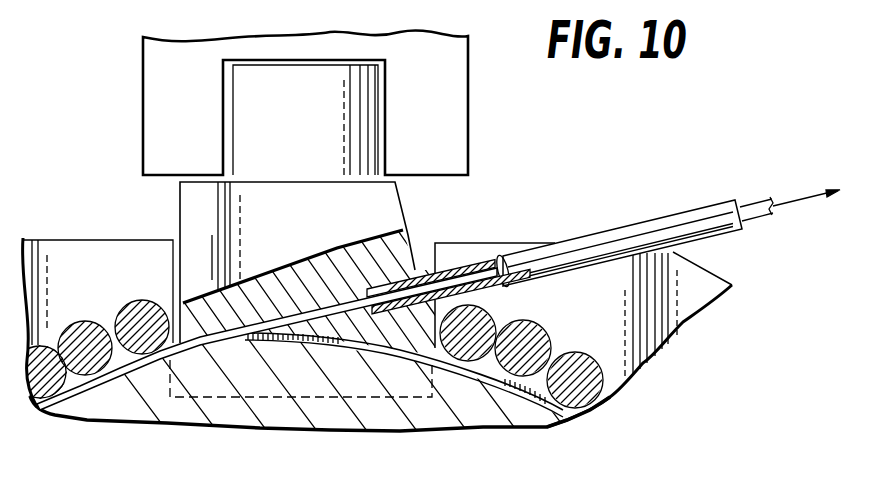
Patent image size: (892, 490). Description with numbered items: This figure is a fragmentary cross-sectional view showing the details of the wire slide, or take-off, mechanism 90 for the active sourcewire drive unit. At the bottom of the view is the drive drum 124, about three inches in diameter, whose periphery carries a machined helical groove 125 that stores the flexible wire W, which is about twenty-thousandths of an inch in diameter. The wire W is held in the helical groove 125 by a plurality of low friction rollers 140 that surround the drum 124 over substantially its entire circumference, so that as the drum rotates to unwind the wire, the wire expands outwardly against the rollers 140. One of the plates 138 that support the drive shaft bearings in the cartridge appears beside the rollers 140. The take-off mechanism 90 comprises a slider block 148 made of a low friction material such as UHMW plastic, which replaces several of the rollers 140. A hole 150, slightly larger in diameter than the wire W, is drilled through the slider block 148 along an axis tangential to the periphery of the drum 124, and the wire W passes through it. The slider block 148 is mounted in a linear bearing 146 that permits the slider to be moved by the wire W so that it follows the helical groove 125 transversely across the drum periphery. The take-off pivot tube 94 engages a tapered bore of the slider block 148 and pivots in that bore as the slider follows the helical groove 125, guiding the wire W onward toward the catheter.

The wire take-off mechanism 90 is at (98, 125).
The take-off pivot tube 94 is at (622, 235).
The flexible wire W is at (468, 276).
The drive drum 124 is at (420, 425).
The helical groove 125 is at (483, 375).
The plate 138 is at (650, 314).
The rollers 140 is at (80, 330).
The linear bearing 146 is at (440, 132).
The slider block 148 is at (200, 207).
The hole 150 is at (285, 300).